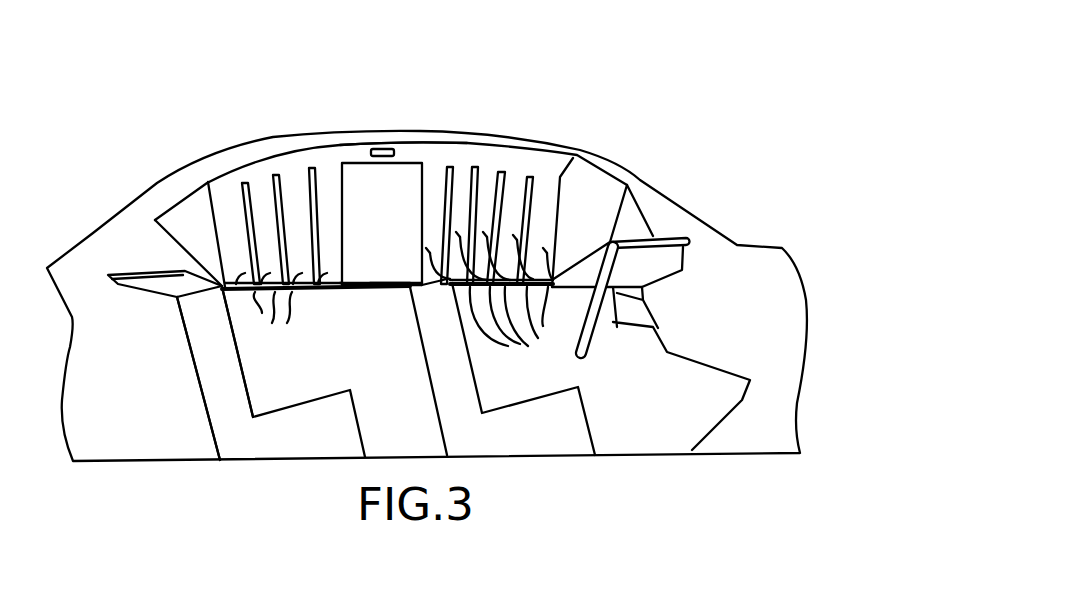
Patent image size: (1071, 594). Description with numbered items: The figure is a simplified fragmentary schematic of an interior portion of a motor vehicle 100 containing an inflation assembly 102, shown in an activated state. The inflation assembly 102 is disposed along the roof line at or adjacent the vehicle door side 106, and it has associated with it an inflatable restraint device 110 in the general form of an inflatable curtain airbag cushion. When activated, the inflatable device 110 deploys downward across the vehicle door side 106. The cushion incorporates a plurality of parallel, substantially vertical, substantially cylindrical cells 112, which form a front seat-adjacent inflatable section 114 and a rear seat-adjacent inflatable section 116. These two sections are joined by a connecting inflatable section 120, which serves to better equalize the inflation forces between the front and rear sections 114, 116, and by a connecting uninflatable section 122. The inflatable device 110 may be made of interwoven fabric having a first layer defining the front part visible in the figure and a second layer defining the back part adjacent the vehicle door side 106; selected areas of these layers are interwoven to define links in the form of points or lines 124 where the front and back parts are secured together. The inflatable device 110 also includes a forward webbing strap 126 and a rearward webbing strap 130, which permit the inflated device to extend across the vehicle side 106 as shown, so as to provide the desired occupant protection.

The motor vehicle 100 is at (670, 82).
The inflation assembly 102 is at (383, 148).
The vehicle door side 106 is at (270, 387).
The inflatable restraint device 110 is at (362, 270).
The cells 112 is at (310, 292).
The front seat-adjacent inflatable section 114 is at (491, 180).
The rear seat-adjacent inflatable section 116 is at (293, 180).
The connecting inflatable section 120 is at (410, 148).
The connecting uninflatable section 122 is at (393, 272).
The points or lines 124 is at (447, 217).
The forward webbing strap 126 is at (650, 237).
The rearward webbing strap 130 is at (150, 268).